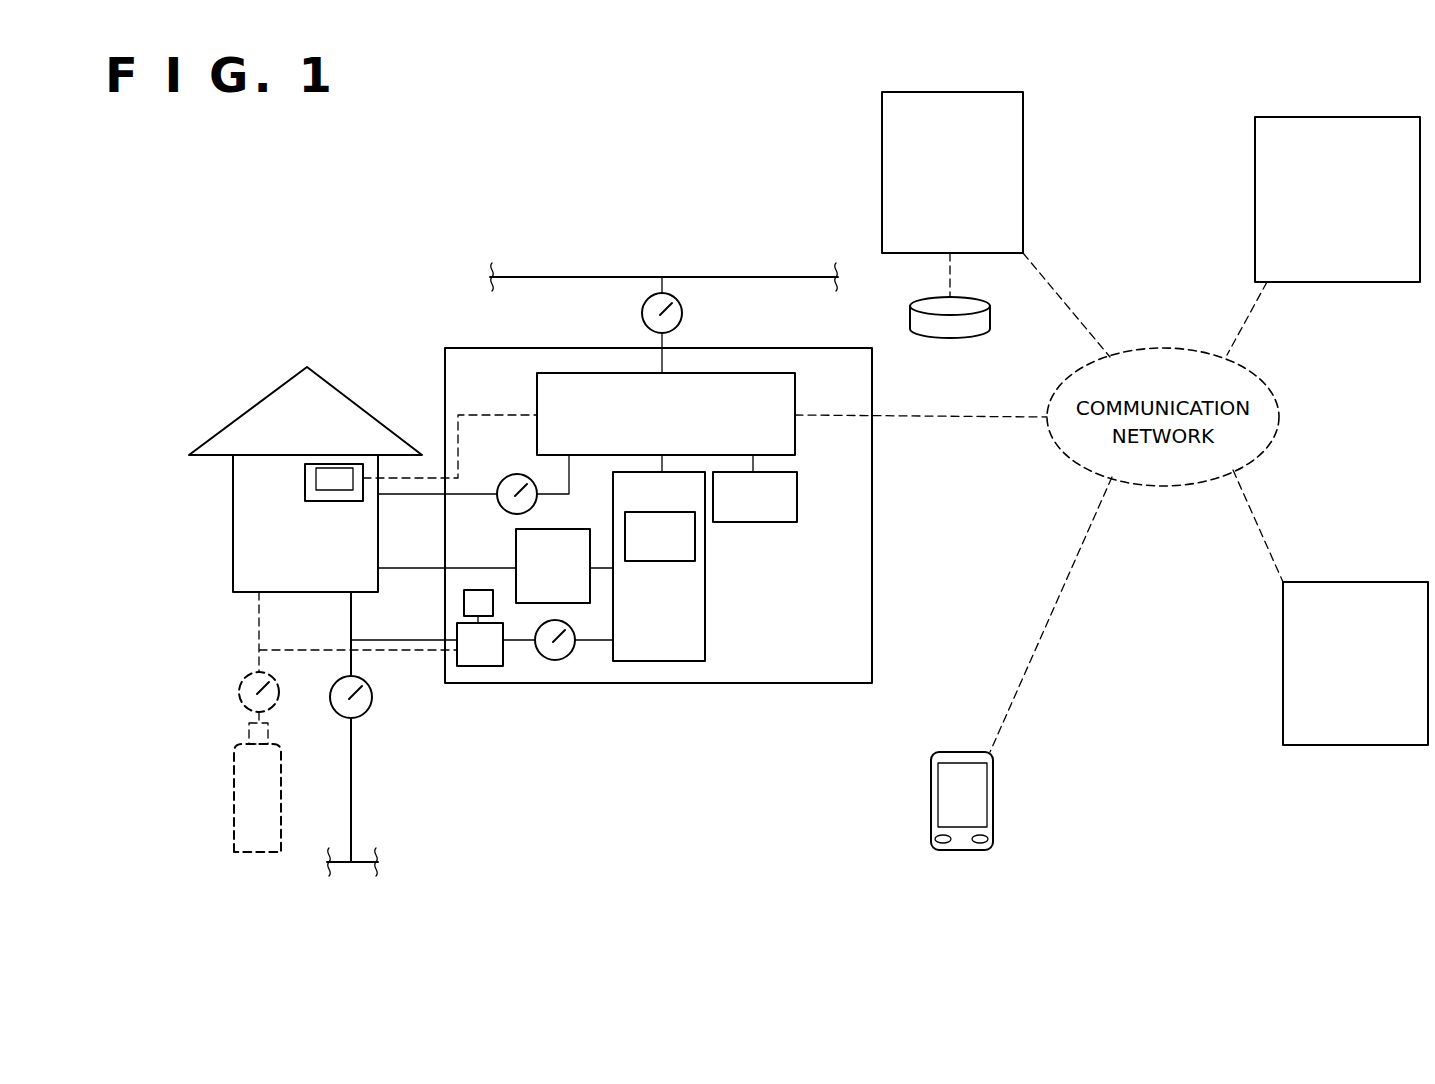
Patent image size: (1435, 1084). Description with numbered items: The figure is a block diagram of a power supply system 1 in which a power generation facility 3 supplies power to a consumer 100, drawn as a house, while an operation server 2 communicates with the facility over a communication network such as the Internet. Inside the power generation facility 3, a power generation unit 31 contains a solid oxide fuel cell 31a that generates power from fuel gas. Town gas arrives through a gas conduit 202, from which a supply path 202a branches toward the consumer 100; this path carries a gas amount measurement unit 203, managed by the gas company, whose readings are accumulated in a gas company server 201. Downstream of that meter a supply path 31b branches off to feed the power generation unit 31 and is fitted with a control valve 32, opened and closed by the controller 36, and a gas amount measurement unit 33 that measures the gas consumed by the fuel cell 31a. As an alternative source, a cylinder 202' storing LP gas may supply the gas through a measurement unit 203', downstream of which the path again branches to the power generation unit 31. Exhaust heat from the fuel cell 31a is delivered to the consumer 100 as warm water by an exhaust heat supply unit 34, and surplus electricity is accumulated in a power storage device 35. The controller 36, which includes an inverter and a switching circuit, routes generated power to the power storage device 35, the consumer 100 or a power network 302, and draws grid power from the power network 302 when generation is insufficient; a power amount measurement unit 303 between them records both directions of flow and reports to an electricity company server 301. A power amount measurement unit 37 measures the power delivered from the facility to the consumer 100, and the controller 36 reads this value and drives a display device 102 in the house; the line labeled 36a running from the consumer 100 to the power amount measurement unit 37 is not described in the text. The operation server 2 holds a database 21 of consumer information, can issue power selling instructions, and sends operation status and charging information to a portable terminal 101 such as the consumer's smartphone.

The power supply system 1 is at (462, 182).
The operation server 2 is at (1023, 160).
The database 21 is at (1012, 308).
The power generation facility 3 is at (873, 532).
The power generation unit 31 is at (701, 566).
The fuel cell 31a is at (698, 553).
The supply path 31b is at (402, 650).
The control valve 32 is at (485, 666).
The gas amount measurement unit 33 is at (562, 660).
The exhaust heat supply unit 34 is at (516, 538).
The power storage device 35 is at (797, 500).
The controller 36 is at (795, 400).
The power line 36a is at (405, 496).
The power amount measurement unit 37 is at (508, 478).
The consumer 100 is at (332, 385).
The portable terminal 101 is at (993, 797).
The display device 102 is at (318, 503).
The gas company server 201 is at (1368, 745).
The gas conduit 202 is at (368, 886).
The cylinder 202' is at (203, 782).
The supply path 202a is at (351, 775).
The gas amount measurement unit 203 is at (385, 716).
The measurement unit 203' is at (204, 692).
The electricity company server 301 is at (1352, 282).
The power network 302 is at (707, 277).
The power amount measurement unit 303 is at (682, 313).